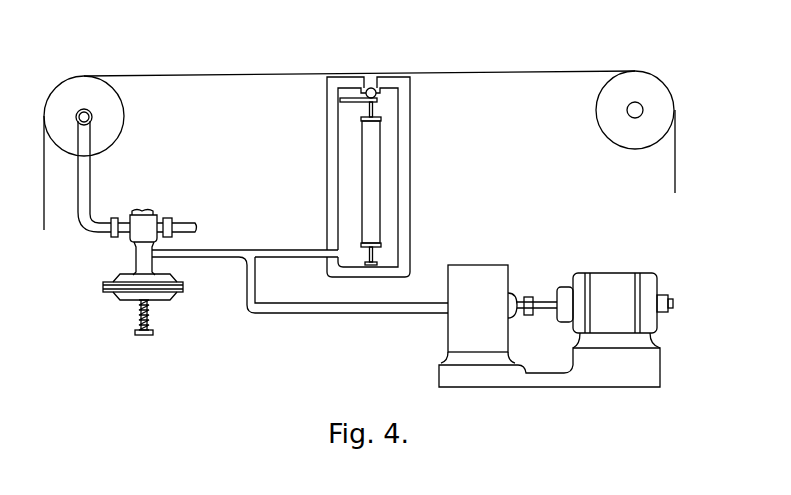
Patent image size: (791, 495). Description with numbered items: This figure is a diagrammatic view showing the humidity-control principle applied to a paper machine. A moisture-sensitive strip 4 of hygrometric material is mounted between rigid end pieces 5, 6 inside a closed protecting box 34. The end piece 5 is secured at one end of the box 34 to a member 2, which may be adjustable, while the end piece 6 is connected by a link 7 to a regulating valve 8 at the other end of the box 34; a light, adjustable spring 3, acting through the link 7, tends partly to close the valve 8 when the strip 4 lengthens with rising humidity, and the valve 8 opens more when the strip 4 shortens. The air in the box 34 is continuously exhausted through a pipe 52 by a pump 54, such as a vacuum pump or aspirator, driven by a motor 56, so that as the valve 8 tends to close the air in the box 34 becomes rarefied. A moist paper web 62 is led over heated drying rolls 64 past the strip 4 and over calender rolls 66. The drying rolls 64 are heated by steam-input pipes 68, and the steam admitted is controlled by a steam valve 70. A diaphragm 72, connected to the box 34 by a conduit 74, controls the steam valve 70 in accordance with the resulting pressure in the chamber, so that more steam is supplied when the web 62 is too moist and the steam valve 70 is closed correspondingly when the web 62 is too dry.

The member 2 is at (377, 266).
The spring 3 is at (352, 104).
The moisture-sensitive strip 4 is at (371, 168).
The end piece 5 is at (381, 245).
The end piece 6 is at (381, 120).
The link 7 is at (374, 110).
The valve 8 is at (377, 94).
The box 34 is at (393, 200).
The pipe 52 is at (308, 303).
The pump 54 is at (475, 265).
The motor 56 is at (603, 275).
The paper web 62 is at (476, 46).
The drying rolls 64 is at (82, 93).
The calender rolls 66 is at (650, 82).
The steam-input pipes 68 is at (92, 173).
The steam valve 70 is at (145, 218).
The diaphragm 72 is at (168, 294).
The conduit 74 is at (193, 259).